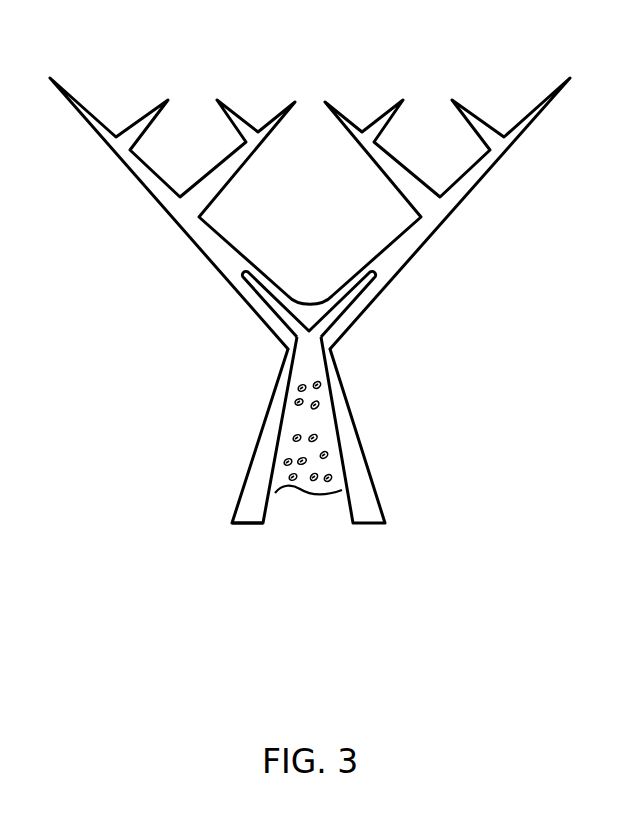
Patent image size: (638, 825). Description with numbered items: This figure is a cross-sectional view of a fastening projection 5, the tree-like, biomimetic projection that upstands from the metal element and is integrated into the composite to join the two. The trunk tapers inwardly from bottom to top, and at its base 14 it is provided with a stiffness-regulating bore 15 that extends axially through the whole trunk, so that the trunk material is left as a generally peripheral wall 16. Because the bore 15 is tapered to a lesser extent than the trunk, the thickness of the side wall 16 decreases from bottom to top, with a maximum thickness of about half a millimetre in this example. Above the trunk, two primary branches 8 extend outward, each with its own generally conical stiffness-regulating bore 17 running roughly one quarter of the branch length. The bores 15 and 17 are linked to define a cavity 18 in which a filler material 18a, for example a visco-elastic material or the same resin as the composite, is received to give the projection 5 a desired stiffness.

The fastening projection 5 is at (310, 398).
The primary branch 8 is at (178, 228).
The base 14 is at (245, 523).
The stiffness-regulating bore 15 is at (310, 500).
The peripheral wall 16 is at (248, 465).
The stiffness-regulating bore 17 is at (268, 300).
The cavity 18 is at (308, 427).
The filler material 18a is at (332, 463).